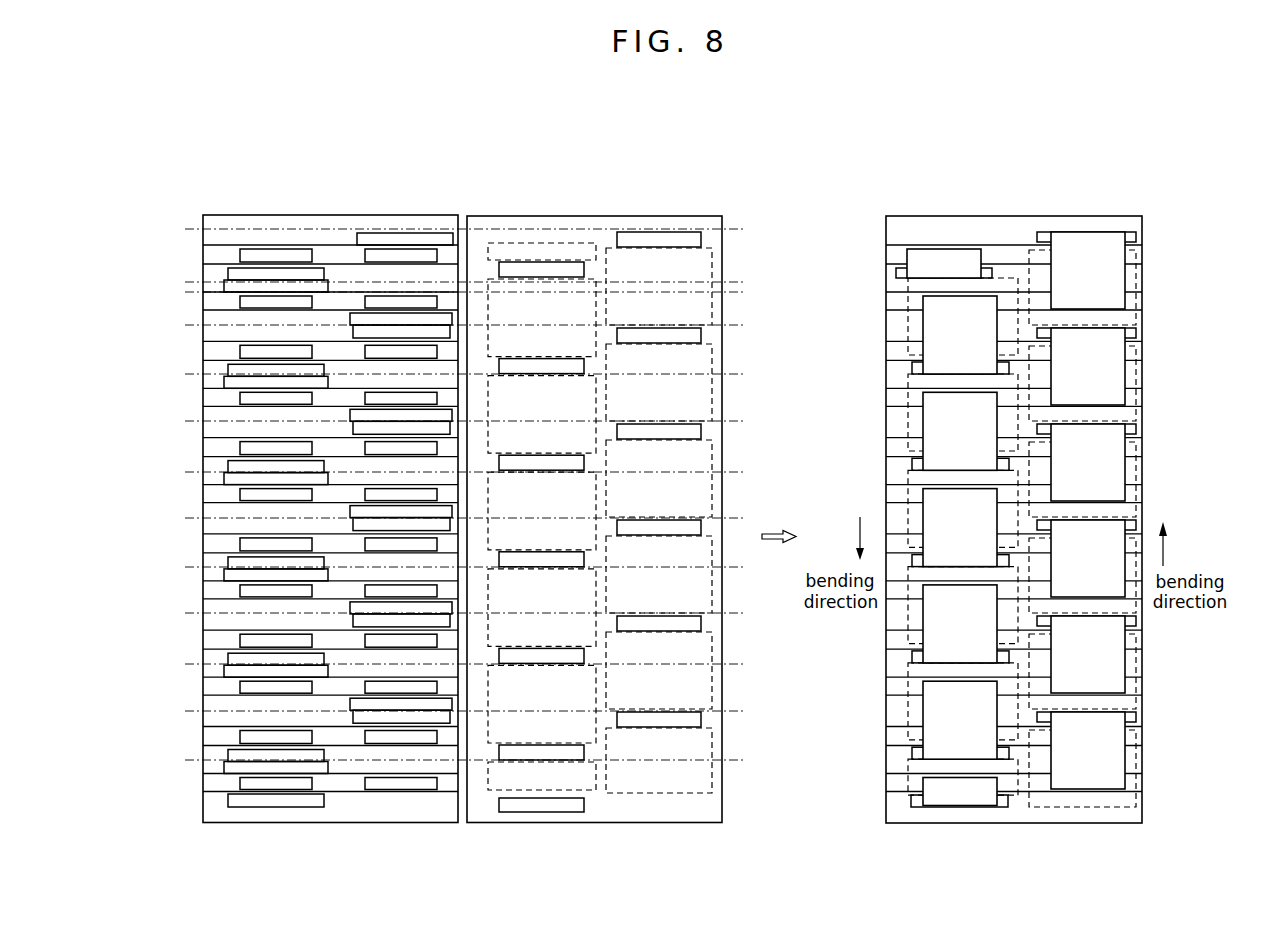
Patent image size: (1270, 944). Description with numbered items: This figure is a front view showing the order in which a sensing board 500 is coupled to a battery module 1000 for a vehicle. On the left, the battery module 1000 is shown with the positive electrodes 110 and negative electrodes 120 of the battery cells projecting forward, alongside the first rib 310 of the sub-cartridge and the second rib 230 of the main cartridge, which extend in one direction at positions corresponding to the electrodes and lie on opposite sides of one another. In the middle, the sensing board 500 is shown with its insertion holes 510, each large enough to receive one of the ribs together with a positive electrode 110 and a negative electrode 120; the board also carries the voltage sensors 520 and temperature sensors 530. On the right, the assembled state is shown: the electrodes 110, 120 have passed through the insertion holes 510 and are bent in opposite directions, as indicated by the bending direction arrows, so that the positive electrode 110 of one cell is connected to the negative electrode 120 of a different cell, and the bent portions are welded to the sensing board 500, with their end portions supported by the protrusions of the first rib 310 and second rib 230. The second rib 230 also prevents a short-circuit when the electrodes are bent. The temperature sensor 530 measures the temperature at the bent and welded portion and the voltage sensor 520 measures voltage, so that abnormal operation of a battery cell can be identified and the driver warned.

The battery module 1000 is at (261, 198).
The positive electrode 110 is at (373, 640).
The negative electrode 120 is at (245, 743).
The second rib 230 is at (418, 412).
The first rib 310 is at (232, 290).
The sensing board 500 is at (498, 840).
The insertion hole 510 is at (626, 285).
The voltage sensor 520 is at (624, 529).
The temperature sensor 530 is at (656, 237).